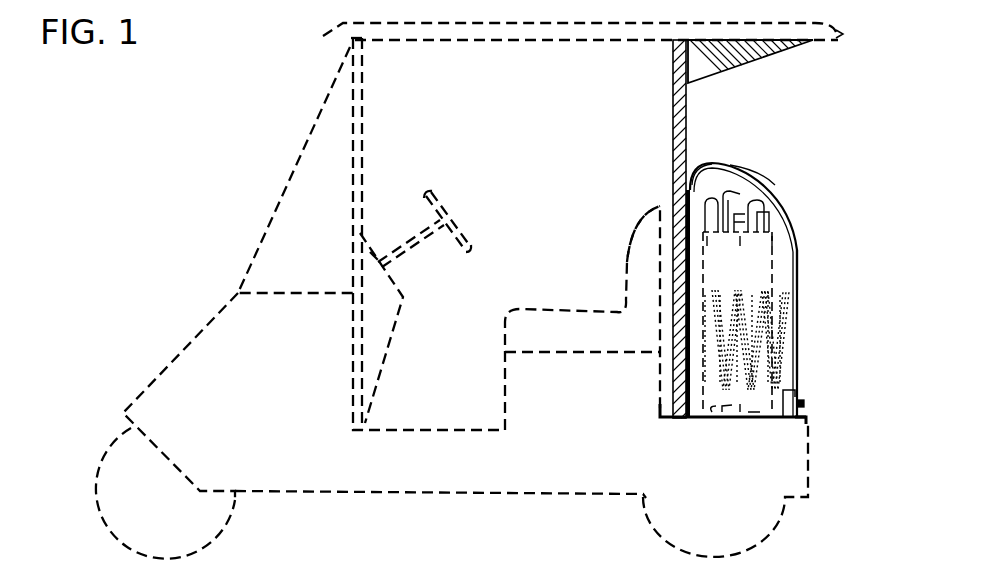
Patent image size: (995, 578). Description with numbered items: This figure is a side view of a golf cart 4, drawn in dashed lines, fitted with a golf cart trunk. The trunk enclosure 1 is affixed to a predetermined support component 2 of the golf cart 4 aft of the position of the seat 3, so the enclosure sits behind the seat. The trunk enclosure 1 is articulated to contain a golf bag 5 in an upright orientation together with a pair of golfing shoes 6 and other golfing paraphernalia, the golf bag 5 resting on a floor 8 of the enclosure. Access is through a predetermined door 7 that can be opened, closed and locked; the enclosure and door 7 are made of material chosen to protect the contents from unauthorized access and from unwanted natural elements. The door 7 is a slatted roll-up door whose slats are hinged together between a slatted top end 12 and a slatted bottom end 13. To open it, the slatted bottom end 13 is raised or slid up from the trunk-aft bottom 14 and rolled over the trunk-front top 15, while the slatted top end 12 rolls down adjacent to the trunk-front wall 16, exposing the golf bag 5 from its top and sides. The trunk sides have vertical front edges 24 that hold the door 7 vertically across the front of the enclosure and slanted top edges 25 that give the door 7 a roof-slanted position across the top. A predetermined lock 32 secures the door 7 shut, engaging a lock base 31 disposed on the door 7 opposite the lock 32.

The trunk enclosure 1 is at (756, 279).
The support component 2 is at (676, 110).
The seat 3 is at (628, 236).
The golf cart 4 is at (138, 182).
The golf bag 5 is at (772, 230).
The pair of golfing shoes 6 is at (717, 420).
The door 7 is at (798, 320).
The floor 8 is at (762, 419).
The slatted top end 12 is at (678, 181).
The slatted bottom end 13 is at (789, 420).
The trunk-aft bottom 14 is at (802, 422).
The trunk-front top 15 is at (708, 168).
The trunk-front wall 16 is at (698, 277).
The vertical front edge 24 is at (798, 266).
The slanted top edge 25 is at (752, 180).
The lock base 31 is at (790, 390).
The lock 32 is at (805, 404).